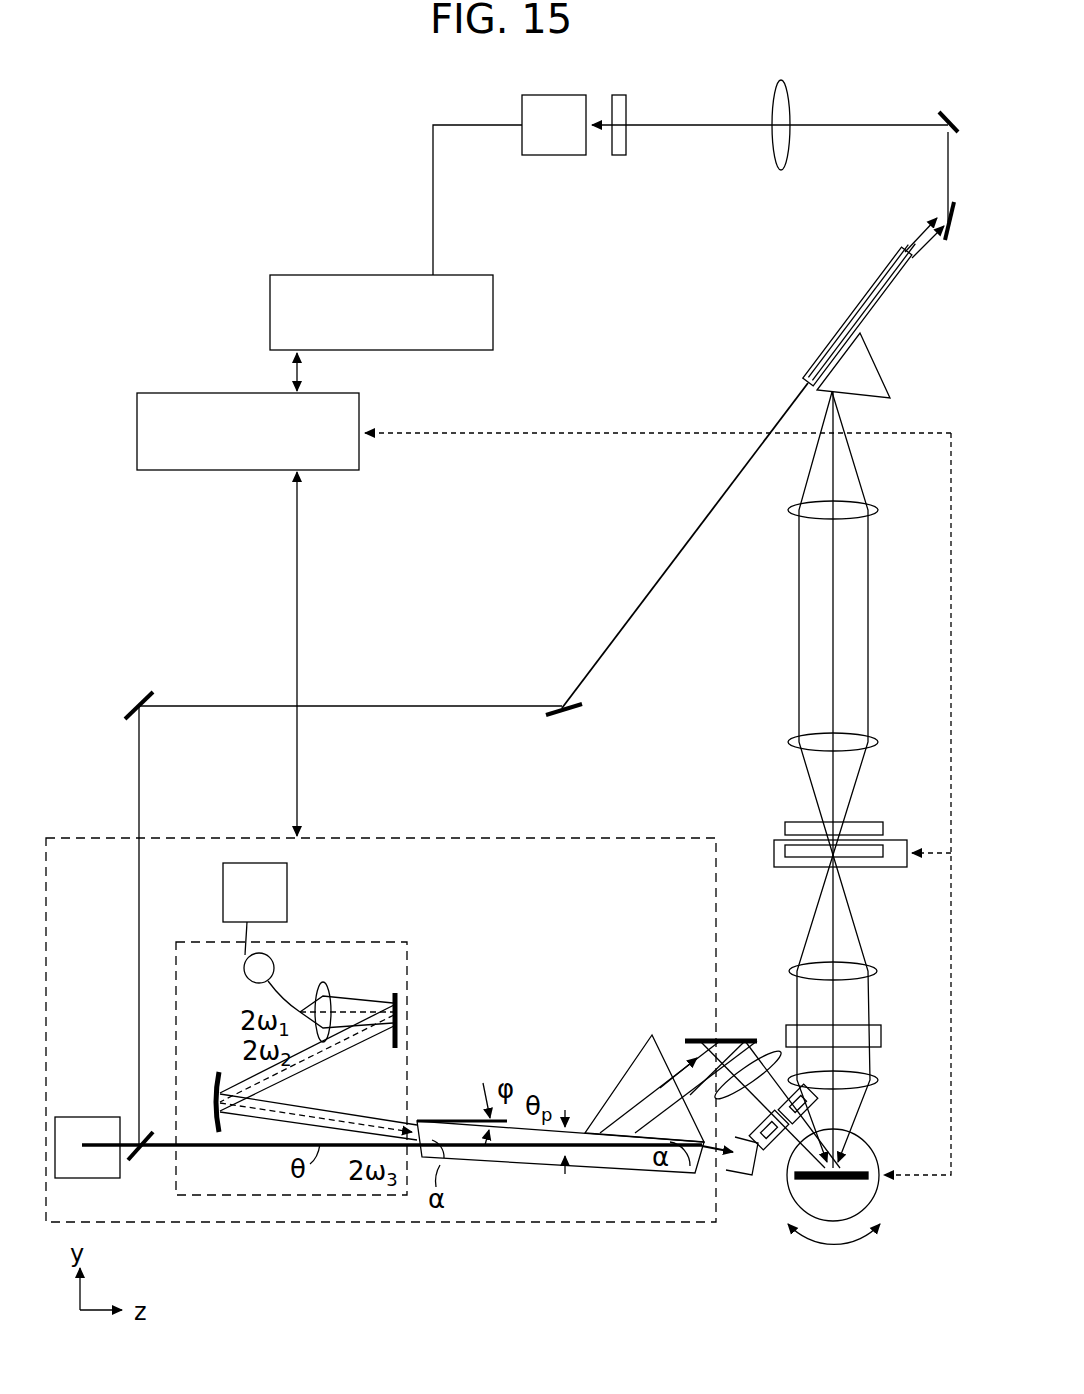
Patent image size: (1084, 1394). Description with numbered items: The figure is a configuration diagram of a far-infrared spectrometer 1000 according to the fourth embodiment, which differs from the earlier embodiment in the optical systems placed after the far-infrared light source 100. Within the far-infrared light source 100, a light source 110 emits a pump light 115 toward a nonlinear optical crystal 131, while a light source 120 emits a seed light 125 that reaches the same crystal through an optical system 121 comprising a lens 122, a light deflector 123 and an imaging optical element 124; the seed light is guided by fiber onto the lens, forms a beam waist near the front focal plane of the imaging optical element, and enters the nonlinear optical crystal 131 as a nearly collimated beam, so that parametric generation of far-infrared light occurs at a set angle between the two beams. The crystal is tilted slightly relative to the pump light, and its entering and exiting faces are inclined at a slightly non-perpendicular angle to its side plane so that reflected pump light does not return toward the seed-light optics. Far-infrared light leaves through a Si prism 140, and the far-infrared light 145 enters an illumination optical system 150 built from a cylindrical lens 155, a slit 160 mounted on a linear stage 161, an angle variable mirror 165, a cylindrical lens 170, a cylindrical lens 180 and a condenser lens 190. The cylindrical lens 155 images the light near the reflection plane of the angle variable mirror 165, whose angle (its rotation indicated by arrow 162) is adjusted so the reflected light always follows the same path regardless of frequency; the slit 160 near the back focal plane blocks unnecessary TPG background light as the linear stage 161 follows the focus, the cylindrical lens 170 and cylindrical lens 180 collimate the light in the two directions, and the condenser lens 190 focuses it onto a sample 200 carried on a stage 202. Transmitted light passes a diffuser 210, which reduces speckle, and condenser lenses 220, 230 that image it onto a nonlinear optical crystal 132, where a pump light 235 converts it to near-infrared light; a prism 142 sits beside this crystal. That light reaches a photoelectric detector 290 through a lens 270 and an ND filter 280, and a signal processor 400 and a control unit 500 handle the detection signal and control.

The far-infrared spectrometer 1000 is at (216, 188).
The far-infrared light source 100 is at (477, 838).
The light source 110 is at (85, 1116).
The pump light 115 is at (147, 1158).
The light source 120 is at (288, 882).
The optical system 121 is at (396, 942).
The lens 122 is at (330, 995).
The light deflector 123 is at (398, 1008).
The imaging optical element 124 is at (215, 1060).
The seed light 125 is at (345, 1118).
The nonlinear optical crystal 131 is at (505, 1166).
The nonlinear optical crystal 132 is at (838, 332).
The Si prism 140 is at (604, 1086).
The prism 142 is at (878, 366).
The far-infrared light 145 is at (686, 1058).
The illumination optical system 150 is at (707, 1040).
The cylindrical lens 155 is at (762, 1064).
The slit 160 is at (790, 1122).
The linear stage 161 is at (762, 1146).
The rotation direction 162 is at (834, 1246).
The angle variable mirror 165 is at (845, 1180).
The cylindrical lens 170 is at (879, 1080).
The cylindrical lens 180 is at (882, 1024).
The condenser lens 190 is at (877, 968).
The sample 200 is at (785, 848).
The stage 202 is at (886, 868).
The diffuser 210 is at (880, 822).
The condenser lens 220 is at (878, 742).
The condenser lens 230 is at (878, 510).
The pump light 235 is at (652, 594).
The lens 270 is at (781, 172).
The ND filter 280 is at (619, 157).
The photoelectric detector 290 is at (557, 157).
The signal processor 400 is at (495, 316).
The control unit 500 is at (182, 471).